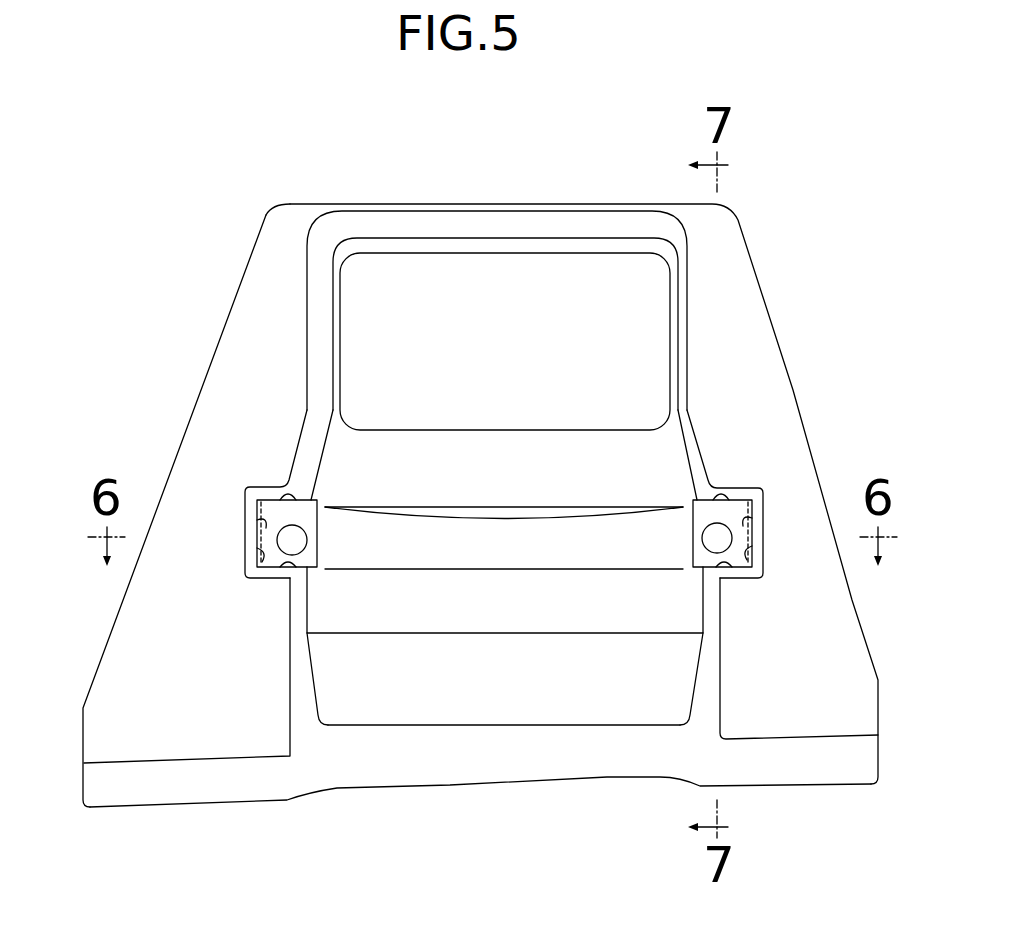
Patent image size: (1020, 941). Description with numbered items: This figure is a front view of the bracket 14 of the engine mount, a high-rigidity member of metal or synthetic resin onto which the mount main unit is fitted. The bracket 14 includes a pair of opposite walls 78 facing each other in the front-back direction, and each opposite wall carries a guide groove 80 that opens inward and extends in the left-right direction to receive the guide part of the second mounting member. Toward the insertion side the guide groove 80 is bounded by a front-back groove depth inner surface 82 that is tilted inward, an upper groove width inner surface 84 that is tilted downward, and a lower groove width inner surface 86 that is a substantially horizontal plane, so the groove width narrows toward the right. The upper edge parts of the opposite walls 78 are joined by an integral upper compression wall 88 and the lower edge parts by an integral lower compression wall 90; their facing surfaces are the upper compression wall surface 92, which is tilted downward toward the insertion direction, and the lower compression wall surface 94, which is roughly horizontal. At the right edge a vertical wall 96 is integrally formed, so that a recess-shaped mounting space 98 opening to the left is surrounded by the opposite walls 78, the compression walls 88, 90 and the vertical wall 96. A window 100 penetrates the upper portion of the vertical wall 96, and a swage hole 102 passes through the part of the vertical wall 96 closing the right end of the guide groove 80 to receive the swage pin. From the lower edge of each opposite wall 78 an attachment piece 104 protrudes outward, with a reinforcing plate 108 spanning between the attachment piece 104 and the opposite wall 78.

The bracket 14 is at (810, 228).
The opposite walls 78 is at (322, 357).
The guide groove 80 is at (258, 524).
The front-back groove depth inner surface 82 is at (262, 562).
The upper groove width inner surface 84 is at (285, 497).
The lower groove width inner surface 86 is at (290, 577).
The upper compression wall 88 is at (410, 225).
The lower compression wall 90 is at (478, 758).
The upper compression wall surface 92 is at (538, 240).
The lower compression wall surface 94 is at (565, 725).
The vertical wall 96 is at (353, 457).
The mounting space 98 is at (390, 685).
The window 100 is at (668, 278).
The swage hole 102 is at (304, 540).
The attachment piece 104 is at (177, 782).
The reinforcing plate 108 is at (222, 405).